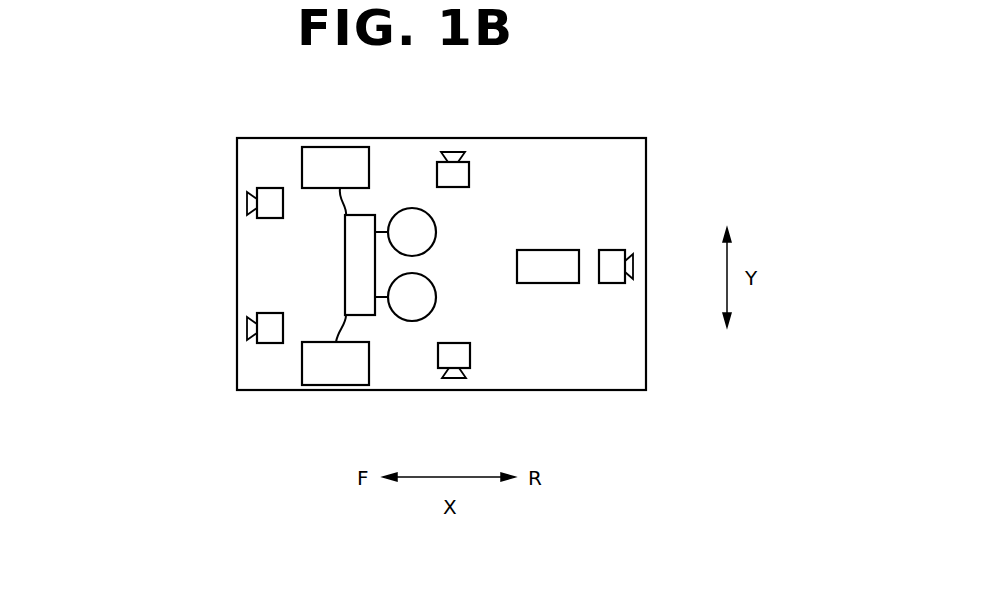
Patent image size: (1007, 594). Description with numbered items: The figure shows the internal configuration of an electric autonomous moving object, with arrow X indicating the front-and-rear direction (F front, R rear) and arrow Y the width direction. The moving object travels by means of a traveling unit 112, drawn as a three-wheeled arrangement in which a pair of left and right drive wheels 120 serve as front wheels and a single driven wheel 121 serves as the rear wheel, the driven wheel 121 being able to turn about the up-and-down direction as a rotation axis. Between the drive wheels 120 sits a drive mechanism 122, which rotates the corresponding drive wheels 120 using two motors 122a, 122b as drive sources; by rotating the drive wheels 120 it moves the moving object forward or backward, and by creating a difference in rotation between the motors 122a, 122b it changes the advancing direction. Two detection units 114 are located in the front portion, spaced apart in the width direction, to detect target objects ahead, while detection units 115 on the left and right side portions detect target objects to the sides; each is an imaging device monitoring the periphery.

The traveling unit 112 is at (606, 128).
The detection unit 114 is at (247, 204).
The detection unit 115 is at (453, 152).
The drive wheel 120 is at (344, 147).
The driven wheel 121 is at (555, 250).
The drive mechanism 122 is at (345, 262).
The motor 122a is at (436, 297).
The motor 122b is at (436, 232).